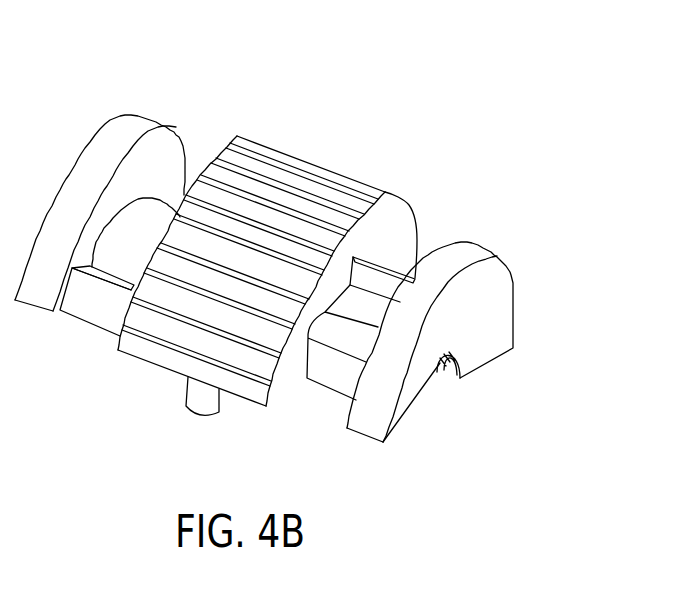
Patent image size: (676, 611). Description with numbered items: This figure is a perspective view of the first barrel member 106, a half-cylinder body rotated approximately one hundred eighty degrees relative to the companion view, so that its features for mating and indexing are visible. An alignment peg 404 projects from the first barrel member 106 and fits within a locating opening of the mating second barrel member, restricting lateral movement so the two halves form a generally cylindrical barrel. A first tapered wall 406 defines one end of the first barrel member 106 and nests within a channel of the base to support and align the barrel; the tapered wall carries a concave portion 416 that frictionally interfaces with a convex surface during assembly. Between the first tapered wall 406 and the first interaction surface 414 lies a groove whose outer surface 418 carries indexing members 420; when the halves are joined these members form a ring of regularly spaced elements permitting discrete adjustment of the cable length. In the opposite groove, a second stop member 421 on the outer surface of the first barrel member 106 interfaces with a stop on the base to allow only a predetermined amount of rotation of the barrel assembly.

The first barrel member 106 is at (296, 259).
The alignment peg 404 is at (190, 401).
The first tapered wall 406 is at (462, 364).
The first interaction surface 414 is at (370, 175).
The concave portion 416 is at (402, 407).
The concave portion 418 is at (378, 313).
The indexing member 420 is at (348, 335).
The second stop member 421 is at (88, 312).